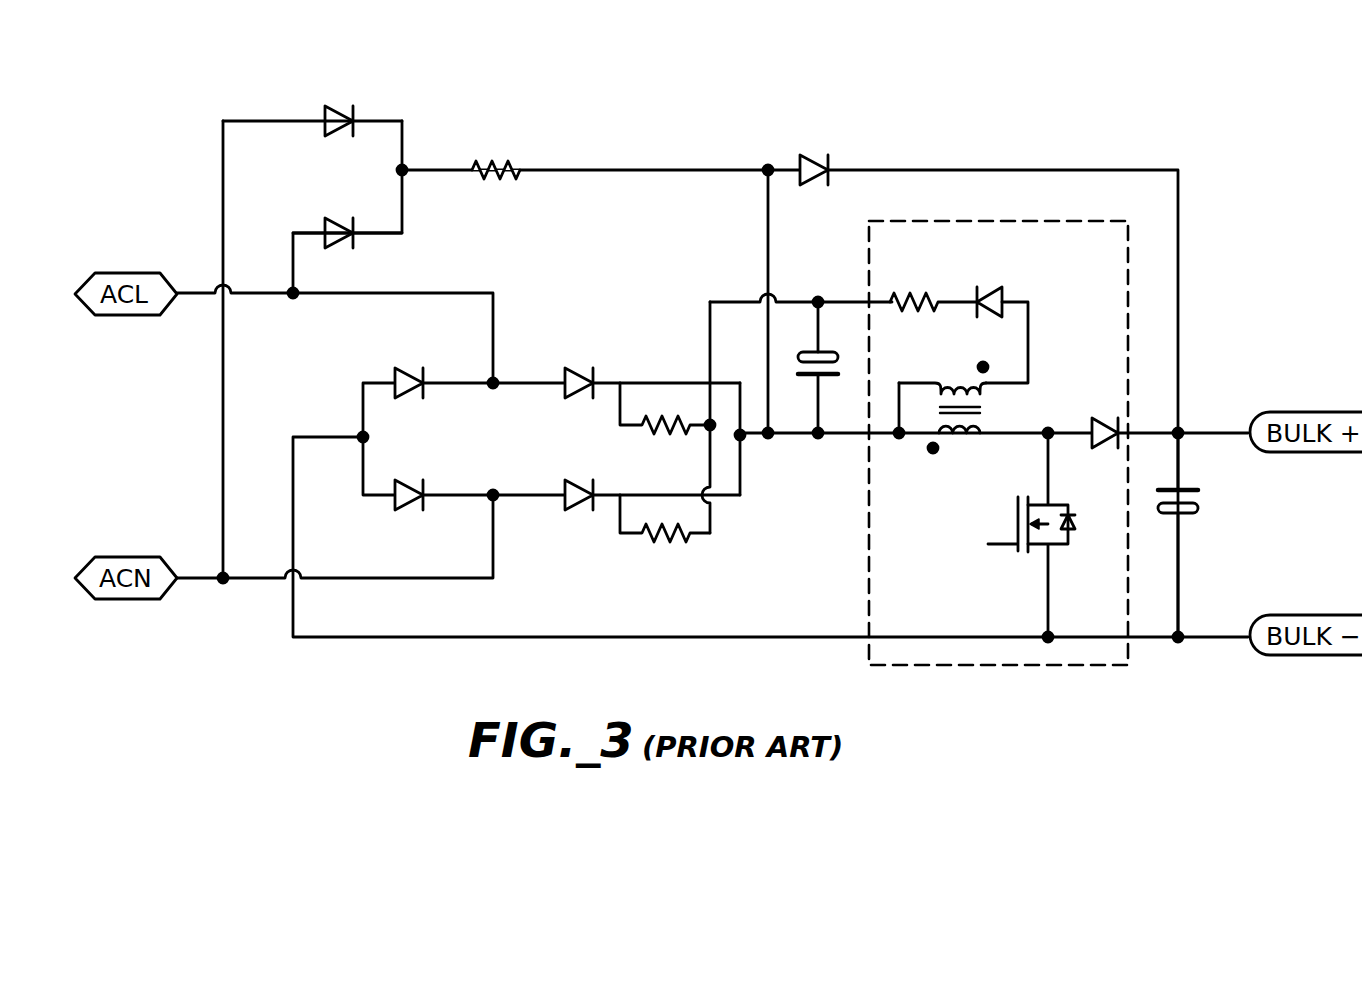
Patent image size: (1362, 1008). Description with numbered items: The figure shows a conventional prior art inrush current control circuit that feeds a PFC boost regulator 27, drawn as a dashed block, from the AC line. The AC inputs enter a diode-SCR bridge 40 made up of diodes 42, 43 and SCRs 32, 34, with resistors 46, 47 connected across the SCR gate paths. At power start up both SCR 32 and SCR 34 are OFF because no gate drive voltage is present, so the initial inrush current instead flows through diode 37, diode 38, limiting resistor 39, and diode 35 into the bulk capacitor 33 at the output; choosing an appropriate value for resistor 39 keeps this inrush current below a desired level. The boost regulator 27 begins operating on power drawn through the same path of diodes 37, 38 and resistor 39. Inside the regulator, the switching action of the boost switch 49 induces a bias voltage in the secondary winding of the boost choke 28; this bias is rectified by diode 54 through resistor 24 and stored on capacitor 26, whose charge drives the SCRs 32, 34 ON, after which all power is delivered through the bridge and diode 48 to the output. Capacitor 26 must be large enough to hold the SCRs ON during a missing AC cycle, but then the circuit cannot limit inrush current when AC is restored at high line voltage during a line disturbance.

The resistor 24 is at (907, 293).
The capacitor 26 is at (841, 357).
The PFC boost regulator 27 is at (868, 555).
The boost choke 28 is at (959, 441).
The SCR 32 is at (576, 367).
The bulk capacitor 33 is at (1190, 514).
The SCR 34 is at (575, 480).
The diode 35 is at (810, 157).
The diode 37 is at (334, 219).
The diode 38 is at (334, 107).
The limiting resistor 39 is at (503, 183).
The bridge rectifier 40 is at (539, 393).
The diode 42 is at (405, 368).
The diode 43 is at (406, 480).
The resistor 46 is at (670, 441).
The resistor 47 is at (671, 552).
The diode 48 is at (1101, 419).
The boost switch 49 is at (1057, 547).
The diode 54 is at (995, 288).